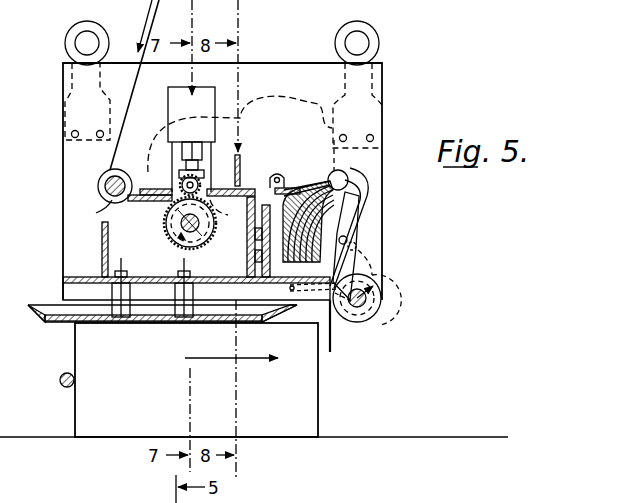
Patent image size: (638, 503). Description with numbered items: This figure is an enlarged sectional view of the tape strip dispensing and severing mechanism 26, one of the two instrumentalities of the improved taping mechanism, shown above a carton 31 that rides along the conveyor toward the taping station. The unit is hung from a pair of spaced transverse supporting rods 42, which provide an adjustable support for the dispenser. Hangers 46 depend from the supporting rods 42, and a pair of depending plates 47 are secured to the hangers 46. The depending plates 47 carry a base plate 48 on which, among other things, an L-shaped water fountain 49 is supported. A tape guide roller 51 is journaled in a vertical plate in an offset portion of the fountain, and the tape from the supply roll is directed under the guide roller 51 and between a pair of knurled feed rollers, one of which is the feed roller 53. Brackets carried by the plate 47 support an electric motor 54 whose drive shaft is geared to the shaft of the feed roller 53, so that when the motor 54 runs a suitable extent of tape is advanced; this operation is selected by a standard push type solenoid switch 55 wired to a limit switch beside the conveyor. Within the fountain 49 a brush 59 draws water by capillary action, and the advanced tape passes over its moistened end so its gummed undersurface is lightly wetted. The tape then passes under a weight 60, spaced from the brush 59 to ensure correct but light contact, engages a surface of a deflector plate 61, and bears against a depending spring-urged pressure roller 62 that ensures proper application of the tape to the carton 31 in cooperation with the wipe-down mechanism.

The tape strip dispensing and severing mechanism 26 is at (384, 96).
The carton 31 is at (262, 388).
The supporting rods 42 is at (80, 50).
The hangers 46 is at (365, 45).
The depending plates 47 is at (84, 170).
The base plate 48 is at (166, 277).
The L-shaped water fountain 49 is at (262, 255).
The tape guide roller 51 is at (92, 213).
The knurled feed roller 53 is at (200, 180).
The electric motor 54 is at (241, 155).
The push type solenoid switch 55 is at (204, 97).
The brush 59 is at (312, 222).
The weight 60 is at (348, 176).
The deflector plate 61 is at (362, 228).
The pressure roller 62 is at (166, 228).